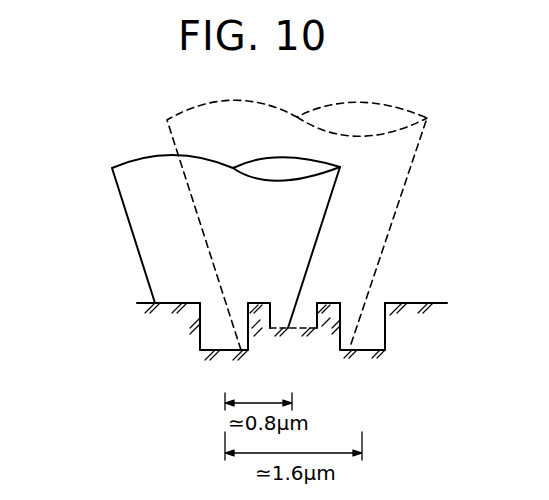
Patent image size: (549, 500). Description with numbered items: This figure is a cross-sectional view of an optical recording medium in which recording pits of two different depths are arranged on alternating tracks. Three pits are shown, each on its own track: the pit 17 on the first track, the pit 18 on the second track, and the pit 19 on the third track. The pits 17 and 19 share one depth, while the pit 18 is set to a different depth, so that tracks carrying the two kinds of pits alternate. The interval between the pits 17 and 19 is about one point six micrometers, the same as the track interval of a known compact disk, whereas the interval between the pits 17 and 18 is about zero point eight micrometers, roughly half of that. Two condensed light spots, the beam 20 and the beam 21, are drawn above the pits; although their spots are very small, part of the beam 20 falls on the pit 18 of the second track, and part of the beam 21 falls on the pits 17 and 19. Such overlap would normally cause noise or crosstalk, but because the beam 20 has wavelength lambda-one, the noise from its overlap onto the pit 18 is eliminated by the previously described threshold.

The pit 17 is at (213, 309).
The pit 18 is at (302, 314).
The pit 19 is at (370, 316).
The beam 20 is at (135, 227).
The beam 21 is at (393, 200).